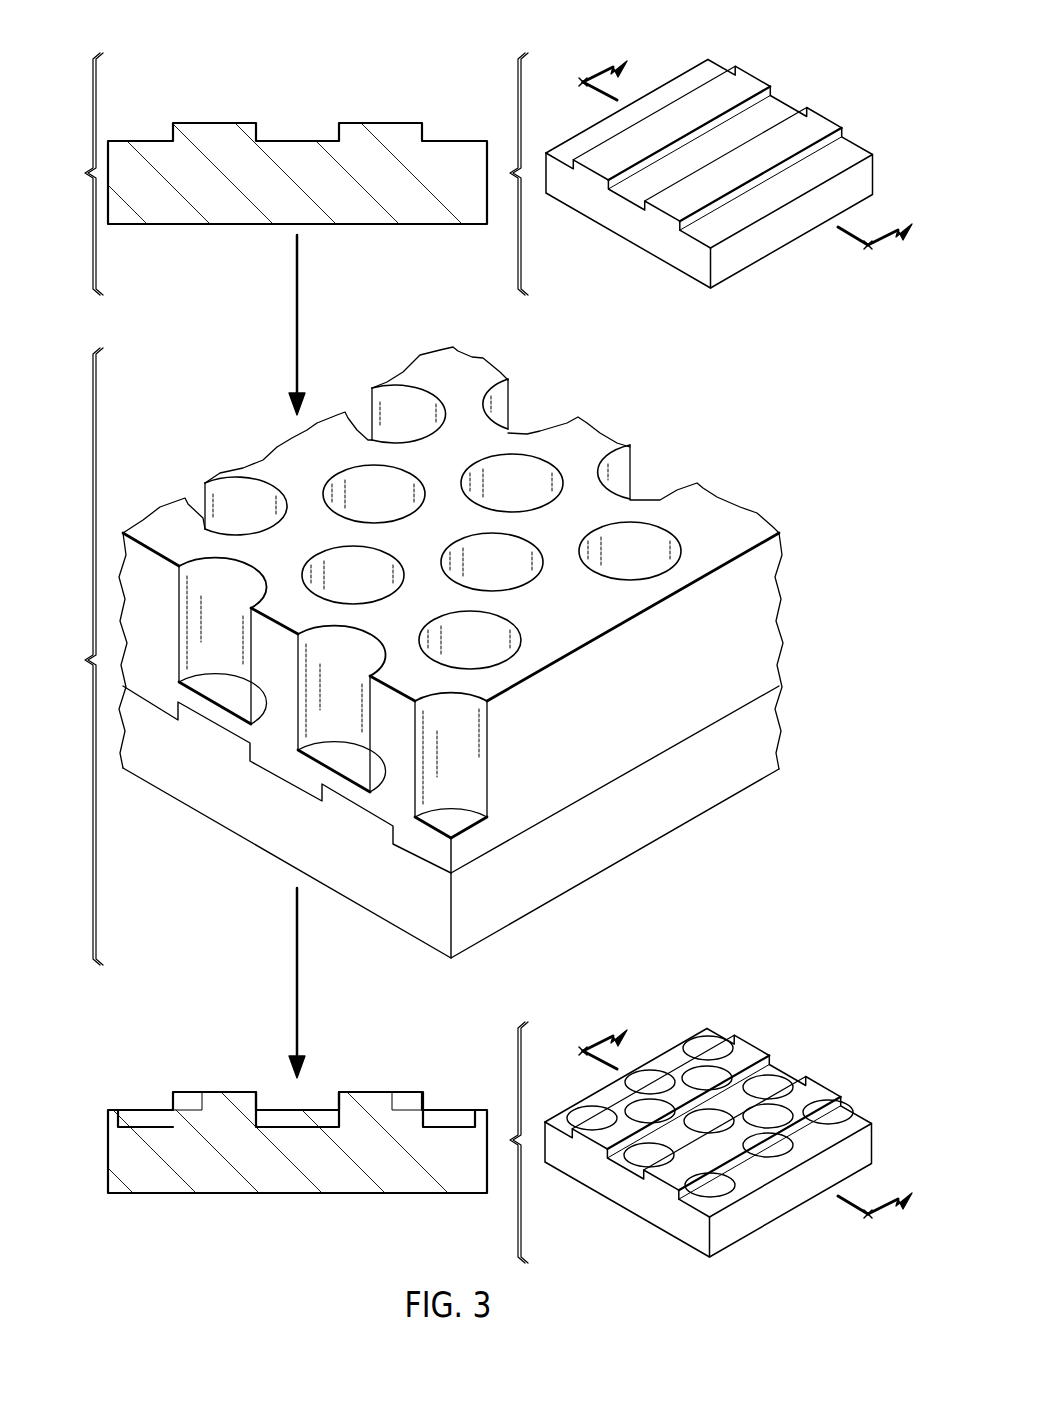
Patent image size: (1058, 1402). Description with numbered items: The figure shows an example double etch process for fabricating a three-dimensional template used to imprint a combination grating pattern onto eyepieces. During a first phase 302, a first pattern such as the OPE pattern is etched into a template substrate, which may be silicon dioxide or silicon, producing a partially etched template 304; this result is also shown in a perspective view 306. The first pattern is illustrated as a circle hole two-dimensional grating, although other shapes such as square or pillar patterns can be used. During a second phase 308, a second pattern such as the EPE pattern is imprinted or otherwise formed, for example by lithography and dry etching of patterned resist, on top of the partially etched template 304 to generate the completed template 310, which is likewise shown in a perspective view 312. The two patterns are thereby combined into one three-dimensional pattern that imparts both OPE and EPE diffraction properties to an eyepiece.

The first phase 302 is at (282, 174).
The partially etched template 304 is at (297, 150).
The perspective view 306 is at (793, 64).
The second phase 308 is at (410, 656).
The template 310 is at (296, 1182).
The perspective view 312 is at (793, 1033).